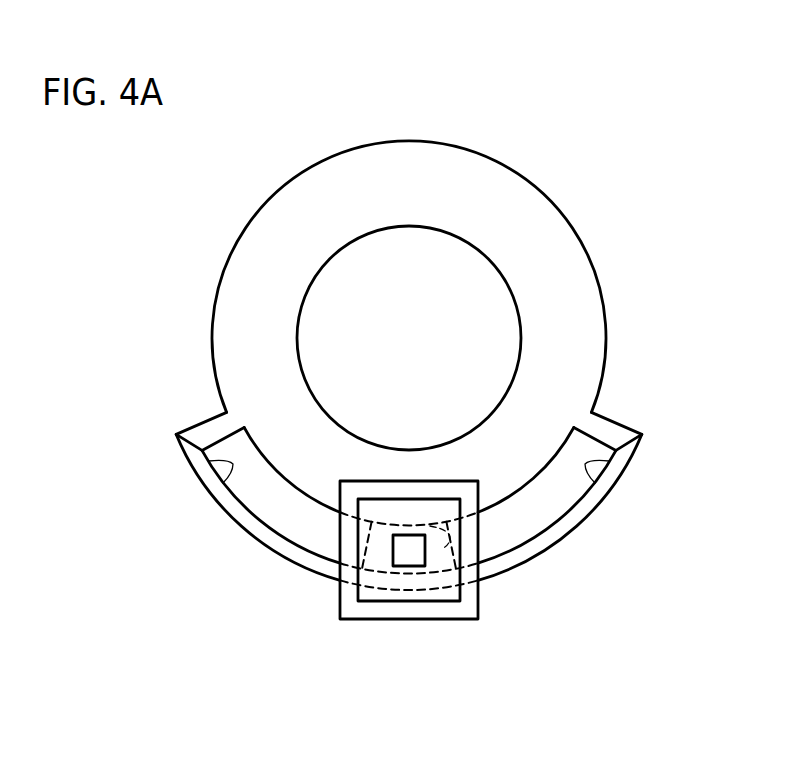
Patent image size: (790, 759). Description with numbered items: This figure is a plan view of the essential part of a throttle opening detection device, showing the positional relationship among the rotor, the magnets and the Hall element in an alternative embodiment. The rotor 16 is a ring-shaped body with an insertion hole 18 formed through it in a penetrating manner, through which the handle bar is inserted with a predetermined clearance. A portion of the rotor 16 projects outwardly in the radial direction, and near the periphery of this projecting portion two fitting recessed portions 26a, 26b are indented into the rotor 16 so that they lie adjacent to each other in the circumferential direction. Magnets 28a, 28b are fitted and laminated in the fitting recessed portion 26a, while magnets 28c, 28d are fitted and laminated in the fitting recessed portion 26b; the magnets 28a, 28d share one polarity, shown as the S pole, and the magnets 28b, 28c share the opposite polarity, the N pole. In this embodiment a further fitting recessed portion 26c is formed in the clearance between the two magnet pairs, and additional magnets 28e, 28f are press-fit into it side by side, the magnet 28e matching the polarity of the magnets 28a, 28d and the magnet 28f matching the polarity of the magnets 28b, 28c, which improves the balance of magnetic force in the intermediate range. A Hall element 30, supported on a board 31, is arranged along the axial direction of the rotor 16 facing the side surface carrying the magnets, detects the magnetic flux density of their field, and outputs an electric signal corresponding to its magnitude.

The rotor 16 is at (533, 202).
The insertion hole 18 is at (457, 238).
The fitting recessed portion 26a is at (231, 467).
The fitting recessed portion 26b is at (587, 467).
The fitting recessed portion 26c is at (435, 520).
The magnet 28a is at (267, 482).
The magnet 28b is at (320, 542).
The magnet 28c is at (551, 482).
The magnet 28d is at (498, 542).
The magnet 28e is at (385, 520).
The magnet 28f is at (408, 556).
The Hall element 30 is at (403, 558).
The board 31 is at (437, 592).